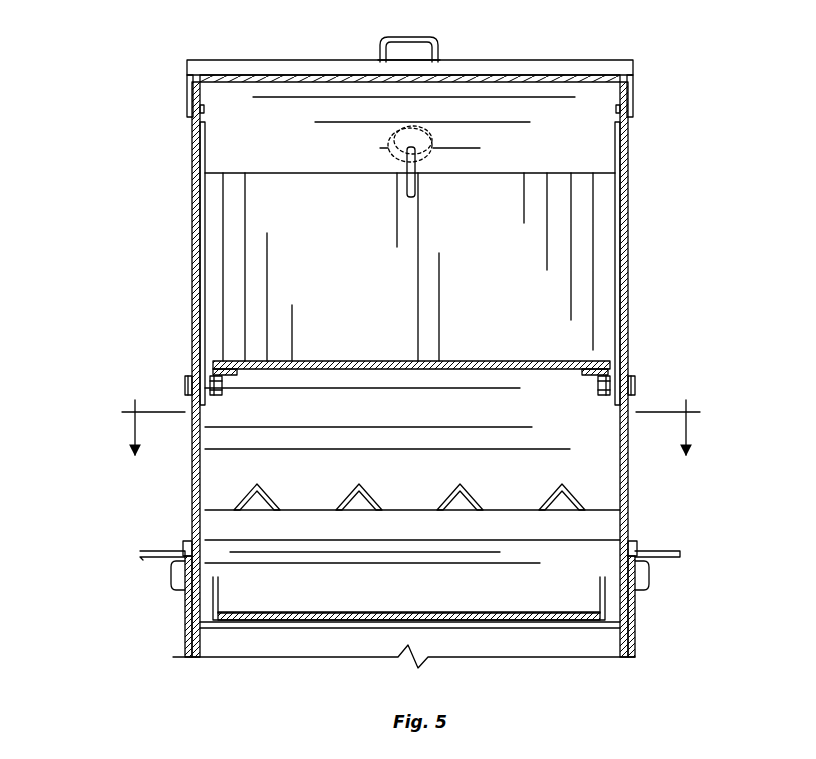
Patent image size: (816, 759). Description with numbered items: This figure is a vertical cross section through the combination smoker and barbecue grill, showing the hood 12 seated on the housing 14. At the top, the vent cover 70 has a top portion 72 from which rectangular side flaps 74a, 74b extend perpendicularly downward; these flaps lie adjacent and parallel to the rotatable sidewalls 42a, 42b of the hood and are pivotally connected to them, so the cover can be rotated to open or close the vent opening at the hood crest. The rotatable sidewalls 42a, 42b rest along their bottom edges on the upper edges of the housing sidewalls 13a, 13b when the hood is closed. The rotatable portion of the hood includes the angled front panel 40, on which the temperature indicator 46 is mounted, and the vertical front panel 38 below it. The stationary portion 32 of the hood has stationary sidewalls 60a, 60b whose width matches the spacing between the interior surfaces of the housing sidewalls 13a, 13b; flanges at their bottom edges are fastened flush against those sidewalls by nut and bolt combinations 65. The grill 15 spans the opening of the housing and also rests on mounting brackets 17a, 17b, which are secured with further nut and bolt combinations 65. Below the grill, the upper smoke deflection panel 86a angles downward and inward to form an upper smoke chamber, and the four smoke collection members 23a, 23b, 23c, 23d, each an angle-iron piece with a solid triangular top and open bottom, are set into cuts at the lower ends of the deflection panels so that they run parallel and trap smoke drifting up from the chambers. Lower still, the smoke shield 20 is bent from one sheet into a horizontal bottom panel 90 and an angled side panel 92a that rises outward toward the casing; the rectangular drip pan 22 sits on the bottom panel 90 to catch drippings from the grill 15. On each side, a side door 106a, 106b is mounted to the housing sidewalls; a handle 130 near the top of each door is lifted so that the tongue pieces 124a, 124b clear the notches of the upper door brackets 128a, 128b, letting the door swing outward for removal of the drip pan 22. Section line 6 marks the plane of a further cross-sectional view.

The vent cover 70 is at (188, 52).
The top portion 72 is at (487, 62).
The side flap 74a is at (187, 97).
The side flap 74b is at (636, 100).
The hood 12 is at (158, 226).
The housing 14 is at (153, 512).
The rotatable sidewall 42a is at (192, 183).
The rotatable sidewall 42b is at (628, 183).
The stationary portion 32 is at (205, 153).
The stationary sidewall 60a is at (193, 248).
The stationary sidewall 60b is at (628, 245).
The angled front panel 40 is at (410, 135).
The temperature indicator 46 is at (432, 152).
The vertical front panel 38 is at (408, 267).
The grill 15 is at (468, 362).
The mounting bracket 17a is at (238, 372).
The mounting bracket 17b is at (582, 372).
The nut and bolt combination 65 is at (185, 385).
The housing sidewall 13a is at (190, 398).
The housing sidewall 13b is at (630, 398).
The section line 6- 6 is at (411, 441).
The upper smoke deflection panel 86a is at (387, 418).
The smoke collection member 23a is at (265, 496).
The smoke collection member 23b is at (369, 496).
The smoke collection member 23c is at (470, 496).
The smoke collection member 23d is at (572, 496).
The angled side panel 92a is at (510, 552).
The drip pan 22 is at (409, 598).
The bottom panel 90 is at (468, 630).
The side door 106a is at (185, 632).
The side door 106b is at (635, 632).
The tongue piece 124a is at (185, 545).
The tongue piece 124b is at (636, 545).
The handle 130 is at (140, 556).
The upper door bracket 128a is at (175, 578).
The upper door bracket 128b is at (645, 578).
The smoke shield 20 is at (294, 640).